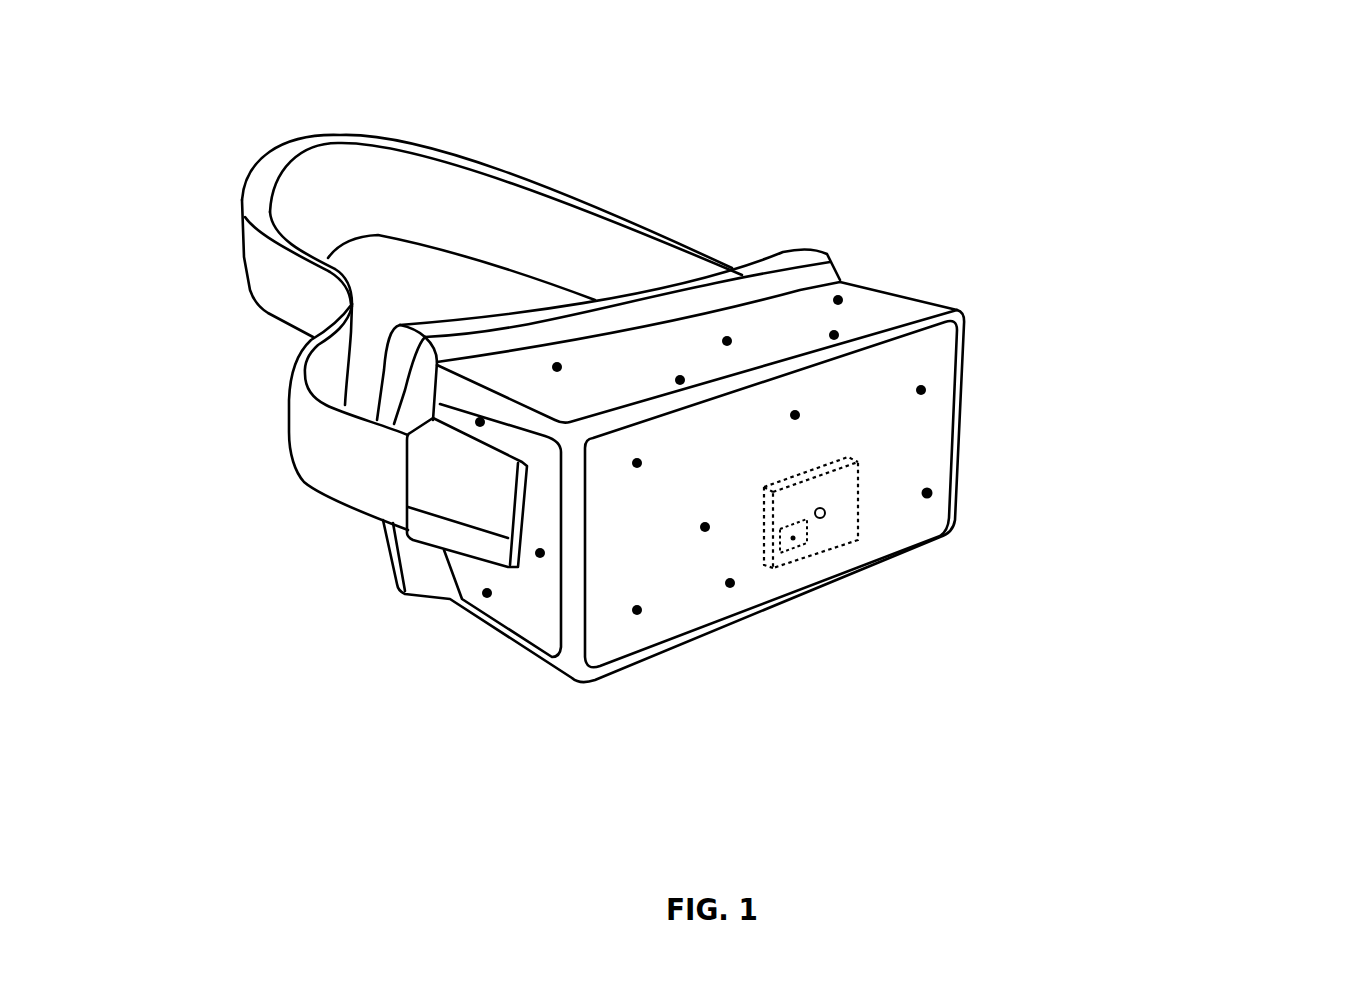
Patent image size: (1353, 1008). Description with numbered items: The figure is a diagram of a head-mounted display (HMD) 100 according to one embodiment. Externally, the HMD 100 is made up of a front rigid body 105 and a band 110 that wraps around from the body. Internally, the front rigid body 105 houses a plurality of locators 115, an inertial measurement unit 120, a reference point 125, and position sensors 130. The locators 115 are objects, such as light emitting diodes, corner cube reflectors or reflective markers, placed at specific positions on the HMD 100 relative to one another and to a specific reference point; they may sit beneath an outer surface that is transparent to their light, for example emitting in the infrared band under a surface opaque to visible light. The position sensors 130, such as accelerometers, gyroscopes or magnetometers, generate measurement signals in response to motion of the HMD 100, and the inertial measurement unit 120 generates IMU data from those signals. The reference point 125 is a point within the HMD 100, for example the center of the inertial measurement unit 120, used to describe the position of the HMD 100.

The head-mounted display 100 is at (166, 23).
The front rigid body 105 is at (958, 308).
The band 110 is at (610, 210).
The locators 115 is at (925, 493).
The inertial measurement unit 120 is at (860, 512).
The reference point 125 is at (824, 519).
The position sensors 130 is at (793, 538).